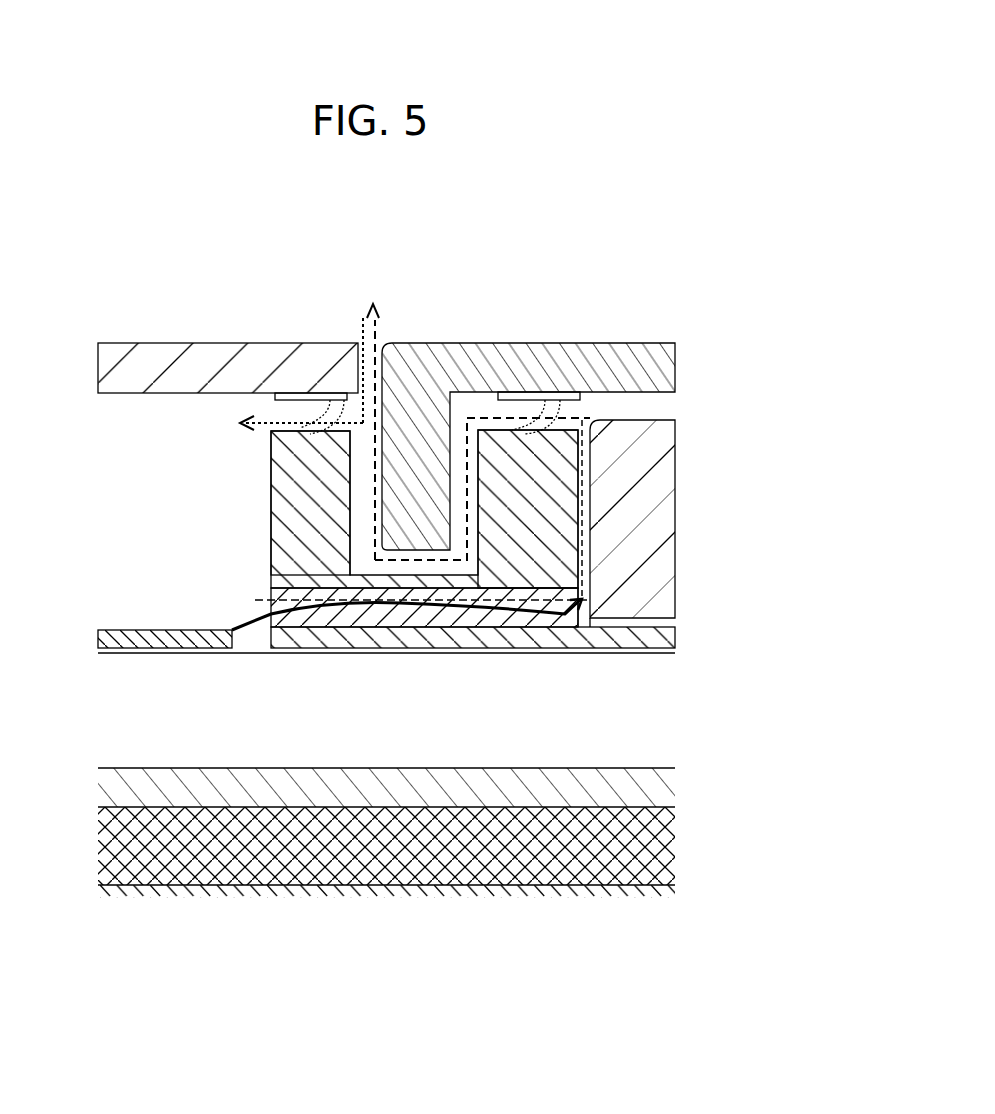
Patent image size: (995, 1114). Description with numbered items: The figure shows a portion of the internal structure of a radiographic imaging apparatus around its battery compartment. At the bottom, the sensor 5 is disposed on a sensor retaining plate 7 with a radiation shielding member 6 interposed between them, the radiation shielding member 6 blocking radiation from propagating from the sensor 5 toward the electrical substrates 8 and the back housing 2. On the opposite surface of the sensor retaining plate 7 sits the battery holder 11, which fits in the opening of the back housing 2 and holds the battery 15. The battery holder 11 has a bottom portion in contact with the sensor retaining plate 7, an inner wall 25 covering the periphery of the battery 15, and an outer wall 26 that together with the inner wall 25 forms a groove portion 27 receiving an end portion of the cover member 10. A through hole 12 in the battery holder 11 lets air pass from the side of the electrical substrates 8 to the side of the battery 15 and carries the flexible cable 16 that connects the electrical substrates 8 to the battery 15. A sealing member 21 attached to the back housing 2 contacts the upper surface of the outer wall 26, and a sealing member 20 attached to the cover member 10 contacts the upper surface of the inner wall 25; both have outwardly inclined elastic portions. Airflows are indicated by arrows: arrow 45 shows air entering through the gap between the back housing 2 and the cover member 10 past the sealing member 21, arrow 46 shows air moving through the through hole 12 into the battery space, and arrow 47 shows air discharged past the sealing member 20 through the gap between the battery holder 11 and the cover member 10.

The back housing 2 is at (137, 355).
The sensor 5 is at (110, 836).
The radiation shielding member 6 is at (115, 800).
The sensor retaining plate 7 is at (118, 725).
The electrical substrates 8 is at (117, 630).
The cover member 10 is at (632, 360).
The battery holder 11 is at (271, 536).
The through hole 12 is at (270, 592).
The battery 15 is at (660, 528).
The flexible cable 16 is at (230, 628).
The sealing member 20 is at (548, 394).
The sealing member 21 is at (323, 397).
The inner wall 25 is at (565, 475).
The outer wall 26 is at (287, 456).
The groove portion 27 is at (480, 562).
The arrow 45 is at (363, 312).
The arrow 46 is at (588, 616).
The arrow 47 is at (377, 326).